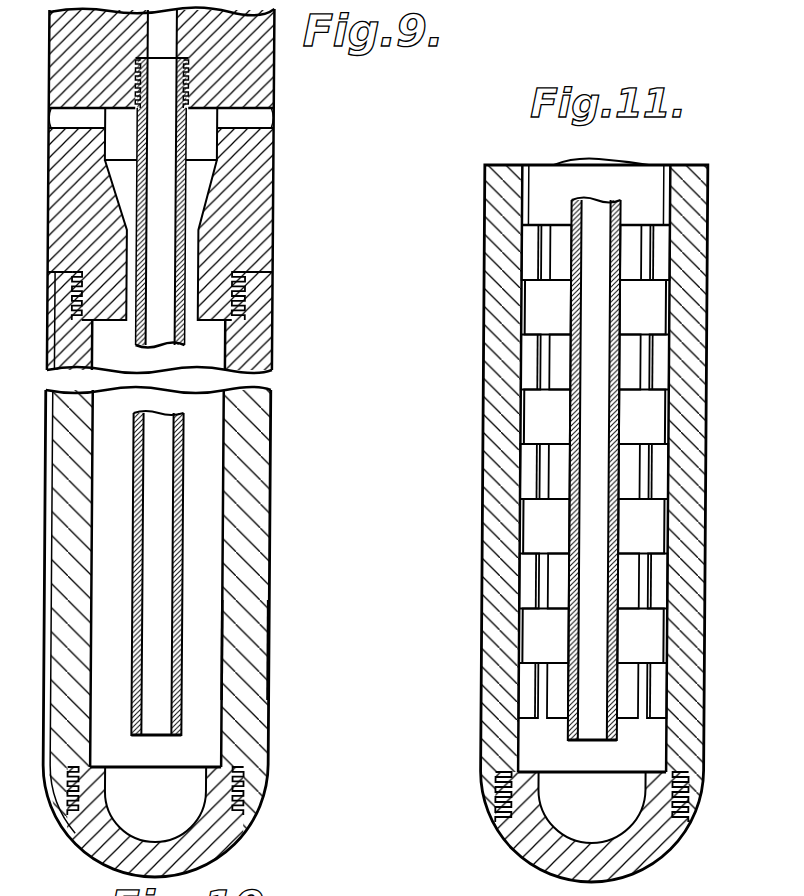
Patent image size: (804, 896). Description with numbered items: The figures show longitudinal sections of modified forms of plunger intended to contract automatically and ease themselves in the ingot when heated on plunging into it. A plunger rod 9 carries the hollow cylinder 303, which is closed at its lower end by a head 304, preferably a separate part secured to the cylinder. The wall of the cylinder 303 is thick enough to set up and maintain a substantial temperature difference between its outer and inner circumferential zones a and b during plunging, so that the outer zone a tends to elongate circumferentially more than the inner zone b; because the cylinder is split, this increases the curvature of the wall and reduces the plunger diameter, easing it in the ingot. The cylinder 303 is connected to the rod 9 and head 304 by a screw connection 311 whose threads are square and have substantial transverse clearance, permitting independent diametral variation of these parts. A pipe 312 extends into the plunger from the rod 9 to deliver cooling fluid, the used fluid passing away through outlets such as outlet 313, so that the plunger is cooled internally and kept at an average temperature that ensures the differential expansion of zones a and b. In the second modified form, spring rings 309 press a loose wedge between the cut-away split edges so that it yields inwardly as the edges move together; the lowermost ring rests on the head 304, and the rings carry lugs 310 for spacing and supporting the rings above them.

In FIG. 9, the plunger rod 9 is at (258, 62).
In FIG. 9, the outlet 313 is at (253, 119).
In FIG. 9, the hollow cylinder 303 is at (247, 441).
In FIG. 11, the hollow cylinder 303 is at (499, 341).
In FIG. 9, the pipe 312 is at (187, 501).
In FIG. 9, the screw connection 311 is at (252, 797).
In FIG. 9, the head 304 is at (213, 843).
In FIG. 11, the head 304 is at (543, 857).
In FIG. 11, the spring rings 309 is at (547, 297).
In FIG. 11, the lugs 310 is at (554, 580).
In FIG. 9, the outer circumferential zone a is at (262, 652).
In FIG. 9, the inner circumferential zone b is at (228, 645).